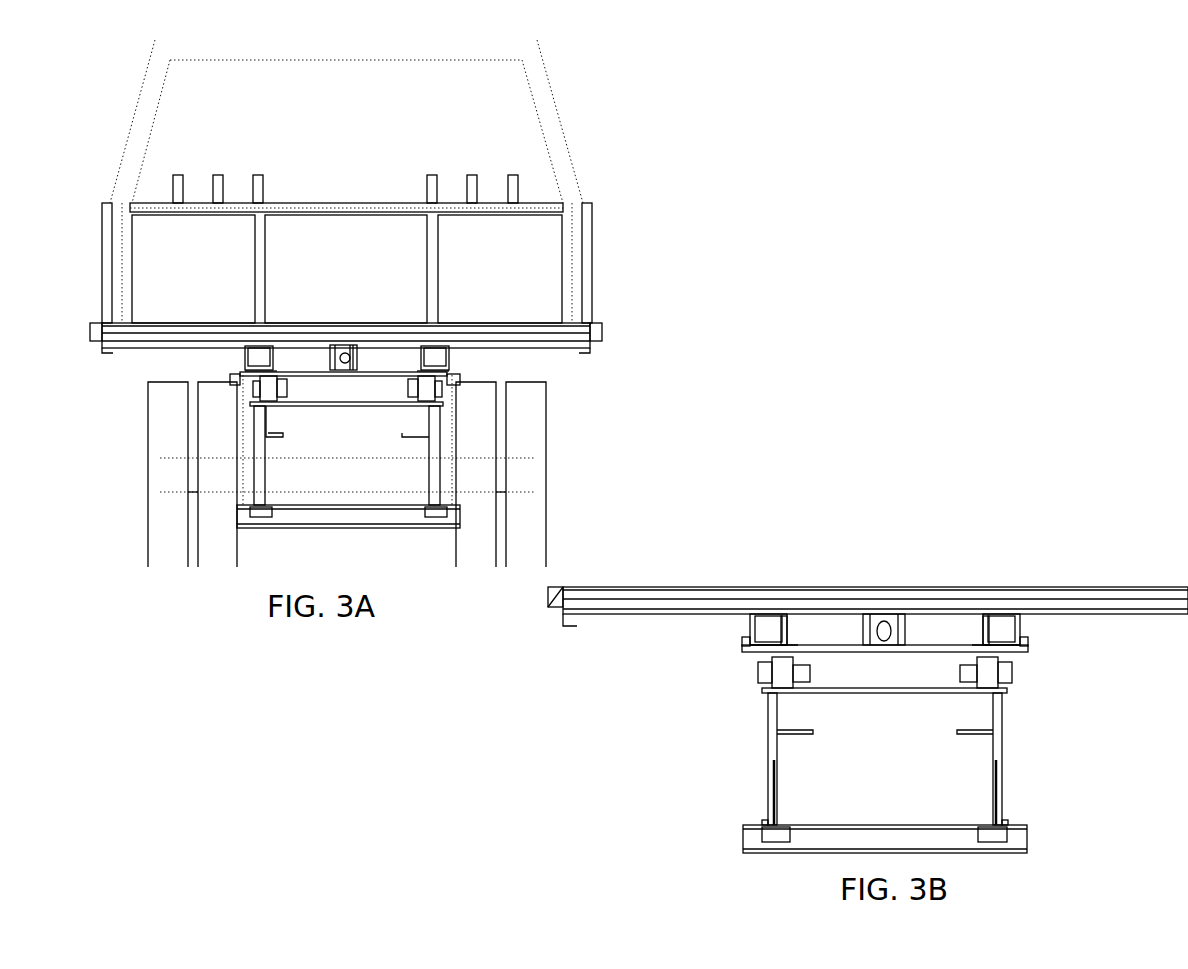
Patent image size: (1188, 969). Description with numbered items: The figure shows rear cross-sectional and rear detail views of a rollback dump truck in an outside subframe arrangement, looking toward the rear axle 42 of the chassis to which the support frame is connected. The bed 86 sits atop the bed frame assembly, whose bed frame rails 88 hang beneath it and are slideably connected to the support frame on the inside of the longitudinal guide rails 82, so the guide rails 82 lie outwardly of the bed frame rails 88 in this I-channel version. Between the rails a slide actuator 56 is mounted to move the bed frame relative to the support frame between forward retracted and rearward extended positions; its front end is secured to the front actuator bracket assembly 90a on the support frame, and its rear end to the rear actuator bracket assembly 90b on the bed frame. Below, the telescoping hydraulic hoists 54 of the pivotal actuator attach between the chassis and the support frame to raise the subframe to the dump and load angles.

In FIG. 3A, the rear axle 42 is at (338, 468).
In FIG. 3A, the pivotal actuator hoists 54 is at (452, 417).
In FIG. 3A, the slide actuator 56 is at (242, 488).
In FIG. 3B, the slide actuator 56 is at (885, 632).
In FIG. 3A, the longitudinal guide rails 82 is at (250, 357).
In FIG. 3B, the longitudinal guide rails 82 is at (758, 630).
In FIG. 3A, the bed 86 is at (187, 325).
In FIG. 3B, the bed 86 is at (660, 587).
In FIG. 3A, the bed frame rails 88 is at (424, 358).
In FIG. 3B, the bed frame rails 88 is at (978, 635).
In FIG. 3A, the front actuator bracket assembly 90a is at (332, 357).
In FIG. 3A, the rear actuator bracket assembly 90b is at (348, 358).